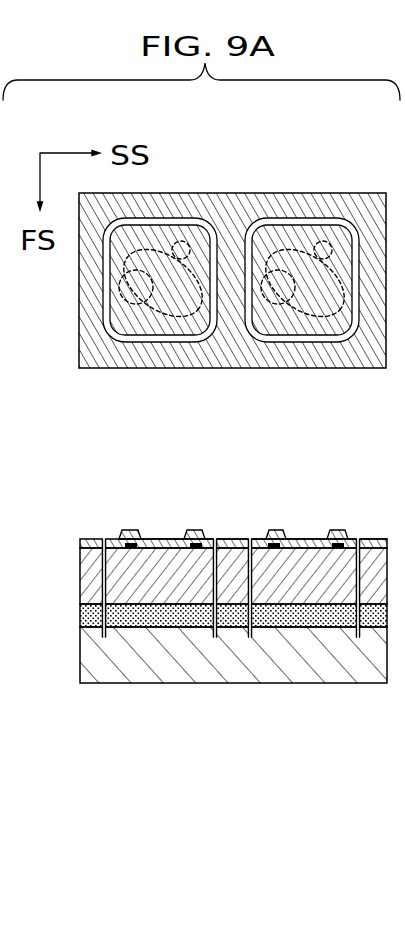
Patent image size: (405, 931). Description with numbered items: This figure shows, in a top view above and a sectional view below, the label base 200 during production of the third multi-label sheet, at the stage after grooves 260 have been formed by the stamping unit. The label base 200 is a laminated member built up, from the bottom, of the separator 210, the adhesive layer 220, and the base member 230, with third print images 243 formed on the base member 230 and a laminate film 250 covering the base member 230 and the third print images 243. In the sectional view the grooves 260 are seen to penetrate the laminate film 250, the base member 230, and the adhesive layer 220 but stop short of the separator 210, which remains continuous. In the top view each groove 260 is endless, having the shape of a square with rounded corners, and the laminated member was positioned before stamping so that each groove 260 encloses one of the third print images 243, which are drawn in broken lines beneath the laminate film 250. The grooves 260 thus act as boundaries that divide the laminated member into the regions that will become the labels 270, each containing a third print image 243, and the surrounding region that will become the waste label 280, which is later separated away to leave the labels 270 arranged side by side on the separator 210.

The label base 200 is at (326, 177).
The separator 210 is at (325, 677).
The adhesive layer 220 is at (235, 622).
The base member 230 is at (140, 597).
The third print image 243 is at (133, 316).
The laminate film 250 is at (82, 279).
The groove 260 is at (113, 337).
The label 270 is at (185, 208).
The waste label 280 is at (236, 212).